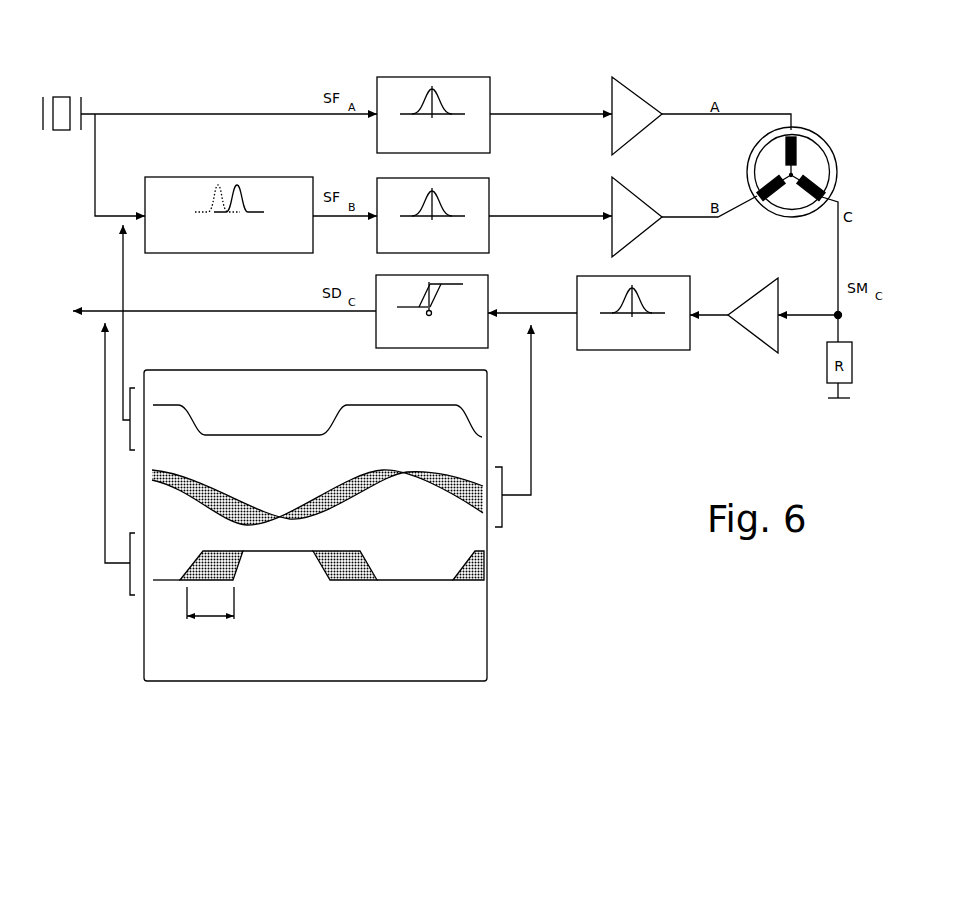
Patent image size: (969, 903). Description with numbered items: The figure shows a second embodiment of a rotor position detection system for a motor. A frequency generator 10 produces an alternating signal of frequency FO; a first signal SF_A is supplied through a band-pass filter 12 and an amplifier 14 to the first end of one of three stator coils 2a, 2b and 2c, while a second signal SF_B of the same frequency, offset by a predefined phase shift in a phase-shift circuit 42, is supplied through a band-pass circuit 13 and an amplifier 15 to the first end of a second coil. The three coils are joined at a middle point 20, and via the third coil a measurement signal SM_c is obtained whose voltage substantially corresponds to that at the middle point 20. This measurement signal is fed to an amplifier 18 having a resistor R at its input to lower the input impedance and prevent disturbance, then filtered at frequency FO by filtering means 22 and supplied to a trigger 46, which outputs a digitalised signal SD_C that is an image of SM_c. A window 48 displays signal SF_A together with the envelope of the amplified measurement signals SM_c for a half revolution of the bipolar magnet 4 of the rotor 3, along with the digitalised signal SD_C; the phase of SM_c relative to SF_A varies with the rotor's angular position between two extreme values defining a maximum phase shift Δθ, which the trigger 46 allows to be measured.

The frequency generator 10 is at (88, 66).
The phase-shift circuit 42 is at (245, 177).
The band-pass filter 12 is at (437, 77).
The band-pass circuit 13 is at (489, 190).
The amplifier 14 is at (643, 98).
The amplifier 15 is at (648, 205).
The rotor 3 is at (862, 124).
The bipolar magnet 4 is at (835, 162).
The stator coil 2a is at (805, 137).
The stator coil 2b is at (826, 190).
The stator coil 2c is at (771, 213).
The middle point 20 is at (792, 180).
The amplifier 18 is at (750, 335).
The filtering means 22 is at (634, 350).
The trigger 46 is at (490, 286).
The window 48 is at (489, 646).